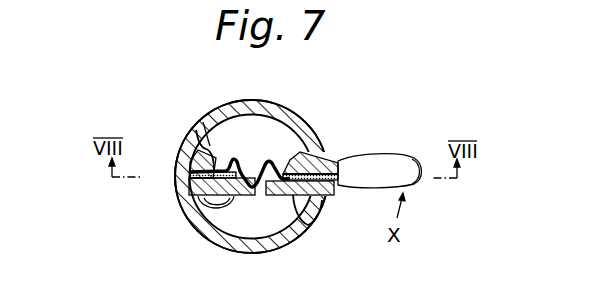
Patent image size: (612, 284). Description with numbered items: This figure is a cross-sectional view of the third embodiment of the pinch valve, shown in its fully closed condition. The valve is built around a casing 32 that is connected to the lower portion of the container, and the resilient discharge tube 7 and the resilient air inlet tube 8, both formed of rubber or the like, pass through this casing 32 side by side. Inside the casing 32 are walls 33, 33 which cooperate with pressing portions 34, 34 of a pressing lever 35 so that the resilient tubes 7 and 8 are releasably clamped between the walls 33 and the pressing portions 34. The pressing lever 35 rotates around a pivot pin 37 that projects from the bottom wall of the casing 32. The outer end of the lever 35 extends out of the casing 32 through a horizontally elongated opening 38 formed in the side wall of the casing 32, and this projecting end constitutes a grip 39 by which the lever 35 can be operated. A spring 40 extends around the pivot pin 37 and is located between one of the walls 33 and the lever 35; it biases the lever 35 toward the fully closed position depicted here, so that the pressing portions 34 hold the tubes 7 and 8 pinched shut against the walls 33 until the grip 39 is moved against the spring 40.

The resilient discharge tube 7 is at (178, 164).
The resilient air inlet tube 8 is at (310, 225).
The casing 32 is at (296, 113).
The walls 33 is at (196, 130).
The pressing portions 34 is at (189, 199).
The pressing lever 35 is at (354, 172).
The pivot pin 37 is at (253, 160).
The horizontally elongated opening 38 is at (302, 134).
The grip 39 is at (411, 166).
The spring 40 is at (271, 162).